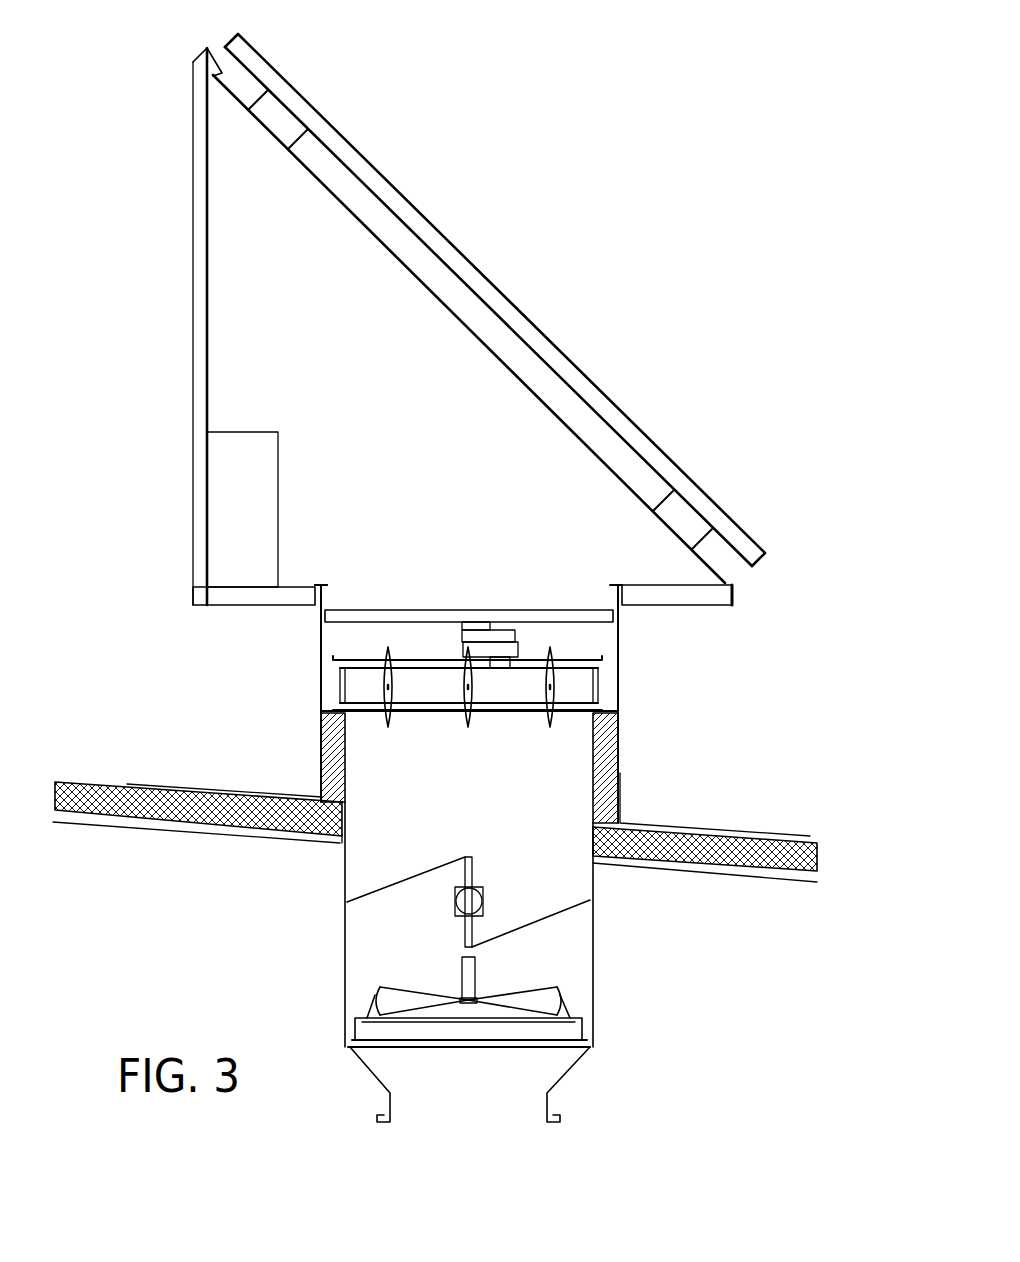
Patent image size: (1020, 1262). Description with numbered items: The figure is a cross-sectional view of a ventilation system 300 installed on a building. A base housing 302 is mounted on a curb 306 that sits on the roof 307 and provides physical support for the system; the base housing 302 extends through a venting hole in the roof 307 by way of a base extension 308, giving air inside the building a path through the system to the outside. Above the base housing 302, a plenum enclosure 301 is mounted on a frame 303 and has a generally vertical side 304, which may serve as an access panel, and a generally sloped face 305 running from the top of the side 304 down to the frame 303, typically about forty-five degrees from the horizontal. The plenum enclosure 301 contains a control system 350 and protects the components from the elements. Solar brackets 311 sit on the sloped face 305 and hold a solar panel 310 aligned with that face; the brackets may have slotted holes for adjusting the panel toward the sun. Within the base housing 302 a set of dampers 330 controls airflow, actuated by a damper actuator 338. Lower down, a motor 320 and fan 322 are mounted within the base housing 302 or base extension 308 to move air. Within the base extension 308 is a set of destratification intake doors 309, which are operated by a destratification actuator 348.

The ventilation system 300 is at (720, 80).
The plenum enclosure 301 is at (427, 410).
The solar panel 310 is at (413, 215).
The sloped face 305 is at (583, 447).
The solar brackets 311 is at (272, 120).
The vertical side 304 is at (193, 355).
The control system 350 is at (259, 518).
The frame 303 is at (315, 593).
The base housing 302 is at (321, 655).
The damper actuator 338 is at (430, 658).
The dampers 330 is at (550, 680).
The curb 306 is at (317, 768).
The base extension 308 is at (343, 860).
The roof 307 is at (728, 845).
The destratification intake doors 309 is at (347, 928).
The destratification actuator 348 is at (465, 857).
The motor 320 is at (462, 975).
The fan 322 is at (548, 990).